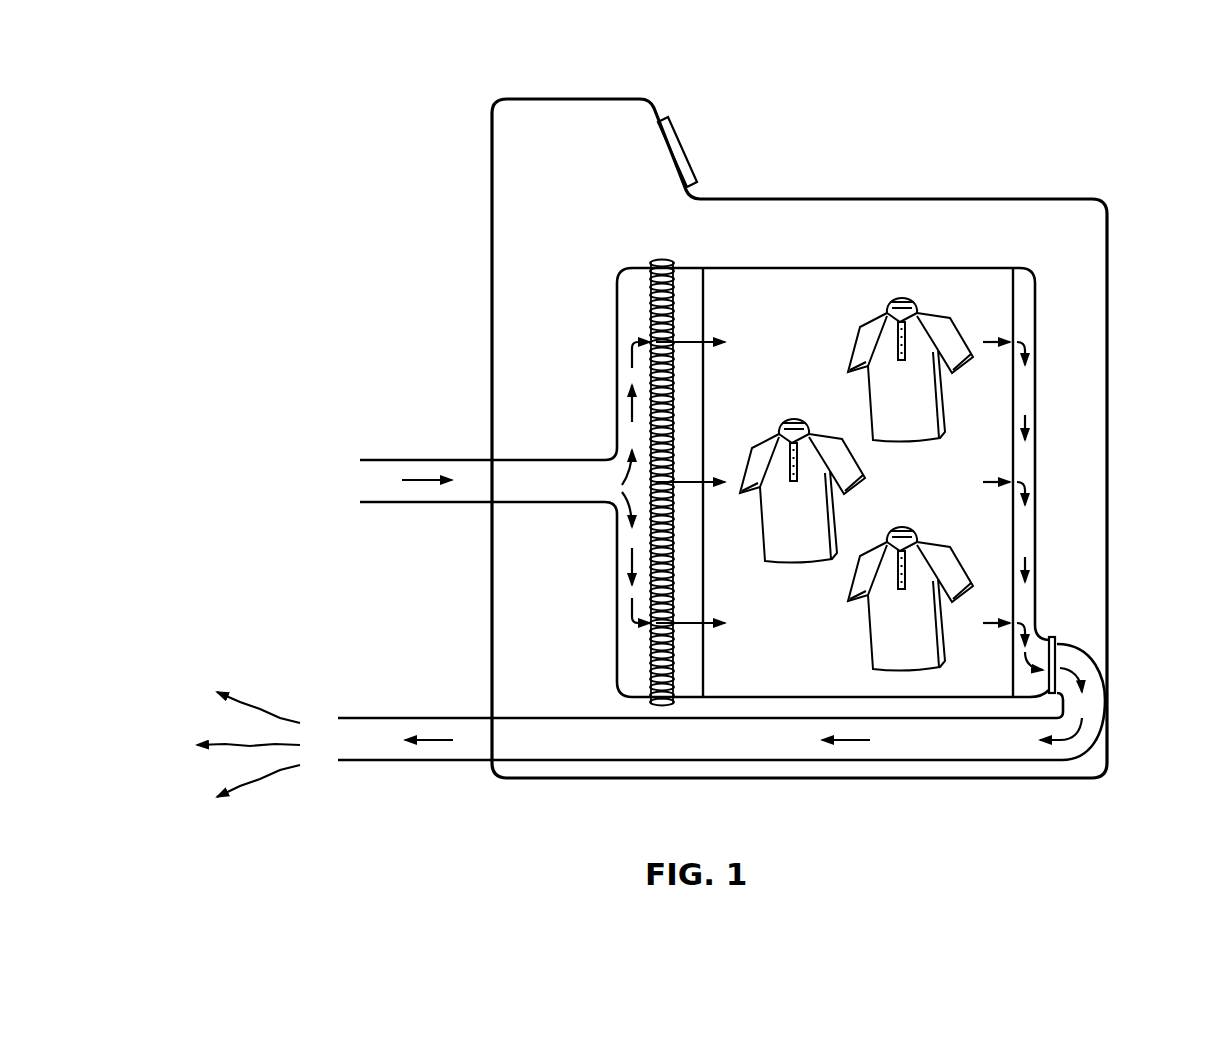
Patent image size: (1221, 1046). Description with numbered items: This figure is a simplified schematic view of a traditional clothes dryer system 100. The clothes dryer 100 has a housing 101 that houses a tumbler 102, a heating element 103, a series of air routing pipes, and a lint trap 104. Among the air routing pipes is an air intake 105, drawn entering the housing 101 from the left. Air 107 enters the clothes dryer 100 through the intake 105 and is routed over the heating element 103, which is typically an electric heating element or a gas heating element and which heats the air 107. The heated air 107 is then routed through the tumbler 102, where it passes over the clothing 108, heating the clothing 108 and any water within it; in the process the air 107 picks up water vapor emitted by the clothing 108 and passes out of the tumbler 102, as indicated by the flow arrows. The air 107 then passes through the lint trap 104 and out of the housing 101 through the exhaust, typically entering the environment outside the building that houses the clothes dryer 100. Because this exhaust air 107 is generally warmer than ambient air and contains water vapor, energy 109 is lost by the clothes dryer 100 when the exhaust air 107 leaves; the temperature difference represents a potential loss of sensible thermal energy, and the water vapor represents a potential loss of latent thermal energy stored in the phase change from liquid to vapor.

The clothes dryer system 100 is at (392, 98).
The housing 101 is at (1060, 200).
The tumbler 102 is at (860, 268).
The heating element 103 is at (658, 260).
The lint trap 104 is at (1052, 637).
The air intake 105 is at (380, 460).
The air 107 is at (708, 342).
The clothing 108 is at (930, 403).
The energy 109 is at (258, 701).